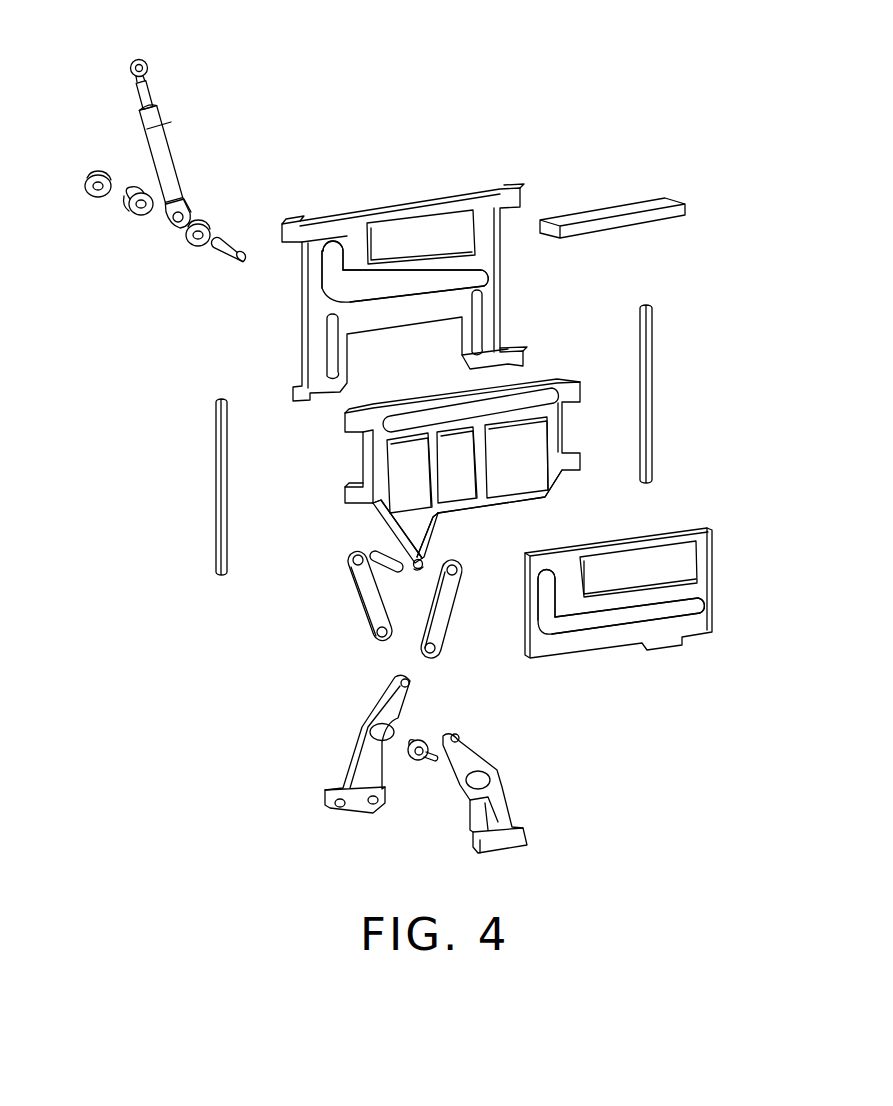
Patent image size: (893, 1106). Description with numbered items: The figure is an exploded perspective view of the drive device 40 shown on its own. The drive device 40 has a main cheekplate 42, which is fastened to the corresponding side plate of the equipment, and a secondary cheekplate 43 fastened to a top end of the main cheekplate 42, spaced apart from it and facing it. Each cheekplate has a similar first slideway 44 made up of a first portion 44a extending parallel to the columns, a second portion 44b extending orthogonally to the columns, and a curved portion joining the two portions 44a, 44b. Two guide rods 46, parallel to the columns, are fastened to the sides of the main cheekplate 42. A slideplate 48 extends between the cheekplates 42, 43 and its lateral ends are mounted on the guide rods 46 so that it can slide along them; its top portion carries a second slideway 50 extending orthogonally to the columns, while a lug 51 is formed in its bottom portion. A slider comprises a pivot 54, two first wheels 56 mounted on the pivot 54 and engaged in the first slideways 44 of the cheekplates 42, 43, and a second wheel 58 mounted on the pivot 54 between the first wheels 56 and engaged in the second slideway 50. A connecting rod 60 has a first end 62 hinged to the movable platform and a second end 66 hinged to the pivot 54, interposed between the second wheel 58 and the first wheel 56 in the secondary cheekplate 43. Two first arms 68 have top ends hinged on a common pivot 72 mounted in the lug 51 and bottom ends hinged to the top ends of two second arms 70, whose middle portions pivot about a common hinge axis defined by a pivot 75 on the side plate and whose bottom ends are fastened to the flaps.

The drive device 40 is at (213, 688).
The main cheekplate 42 is at (563, 210).
The secondary cheekplate 43 is at (712, 563).
The slideway 44 is at (483, 280).
The first portion 44a is at (333, 262).
The second portion 44b is at (422, 293).
The guide rod 46 is at (652, 418).
The slideplate 48 is at (512, 505).
The slideway 50 is at (512, 400).
The lug 51 is at (422, 542).
The pivot 54 is at (232, 245).
The first wheel 56 is at (95, 197).
The second wheel 58 is at (128, 212).
The connecting rod 60 is at (172, 143).
The first end 62 is at (133, 63).
The second end 66 is at (188, 205).
The first arm 68 is at (440, 586).
The second arm 70 is at (353, 812).
The pivot 72 is at (383, 556).
The pivot 75 is at (423, 761).